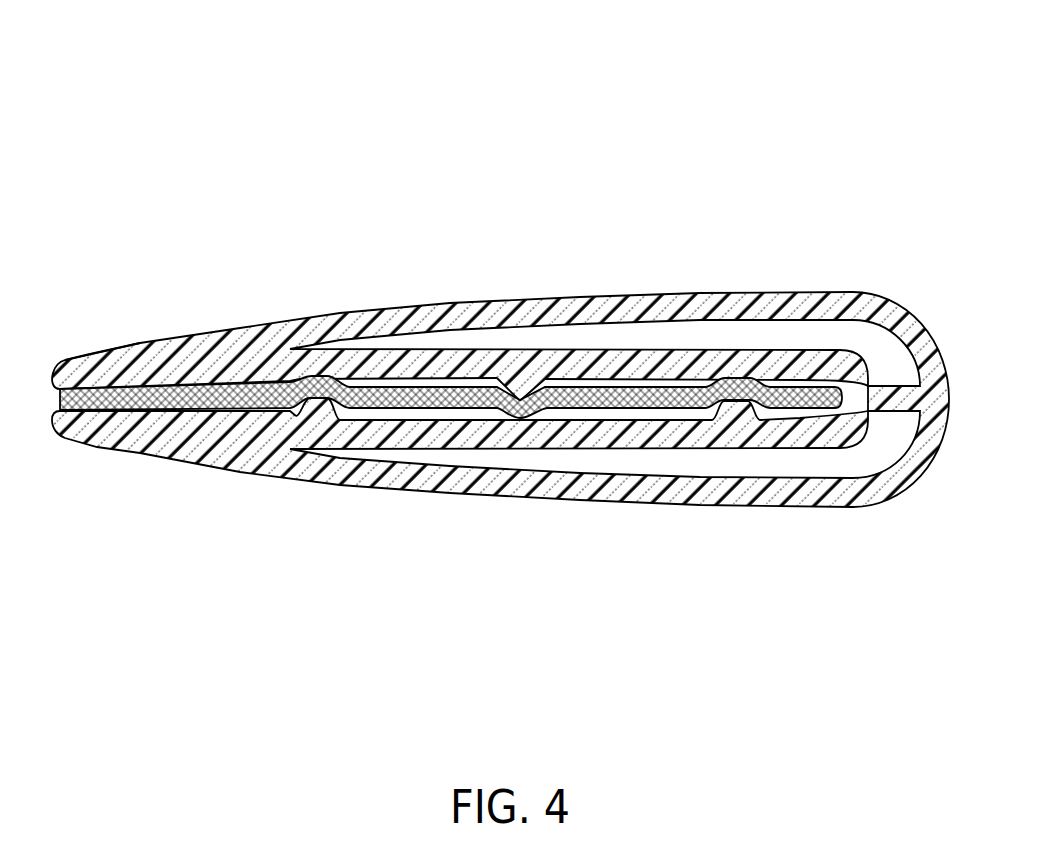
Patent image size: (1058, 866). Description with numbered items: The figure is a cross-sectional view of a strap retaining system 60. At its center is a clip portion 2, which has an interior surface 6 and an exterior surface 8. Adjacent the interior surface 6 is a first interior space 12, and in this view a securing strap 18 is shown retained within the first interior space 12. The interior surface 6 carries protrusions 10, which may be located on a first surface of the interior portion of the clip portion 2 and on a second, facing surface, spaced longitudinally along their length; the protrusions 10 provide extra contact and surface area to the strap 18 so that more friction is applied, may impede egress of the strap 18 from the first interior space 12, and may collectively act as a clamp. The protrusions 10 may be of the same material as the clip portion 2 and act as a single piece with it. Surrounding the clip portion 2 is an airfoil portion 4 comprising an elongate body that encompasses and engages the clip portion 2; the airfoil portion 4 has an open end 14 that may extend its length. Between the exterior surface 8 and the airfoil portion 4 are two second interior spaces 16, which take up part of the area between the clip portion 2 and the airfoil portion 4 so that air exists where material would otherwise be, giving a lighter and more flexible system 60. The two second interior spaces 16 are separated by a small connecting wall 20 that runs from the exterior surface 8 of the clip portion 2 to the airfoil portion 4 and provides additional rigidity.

The clip portion 2 is at (757, 425).
The airfoil portion 4 is at (455, 305).
The interior surface 6 is at (537, 430).
The exterior surface 8 is at (638, 352).
The protrusion 10 is at (293, 378).
The first interior space 12 is at (635, 412).
The open end 14 is at (52, 400).
The second interior space 16 is at (880, 352).
The securing strap 18 is at (130, 376).
The connecting wall 20 is at (905, 400).
The strap retaining system 60 is at (500, 315).